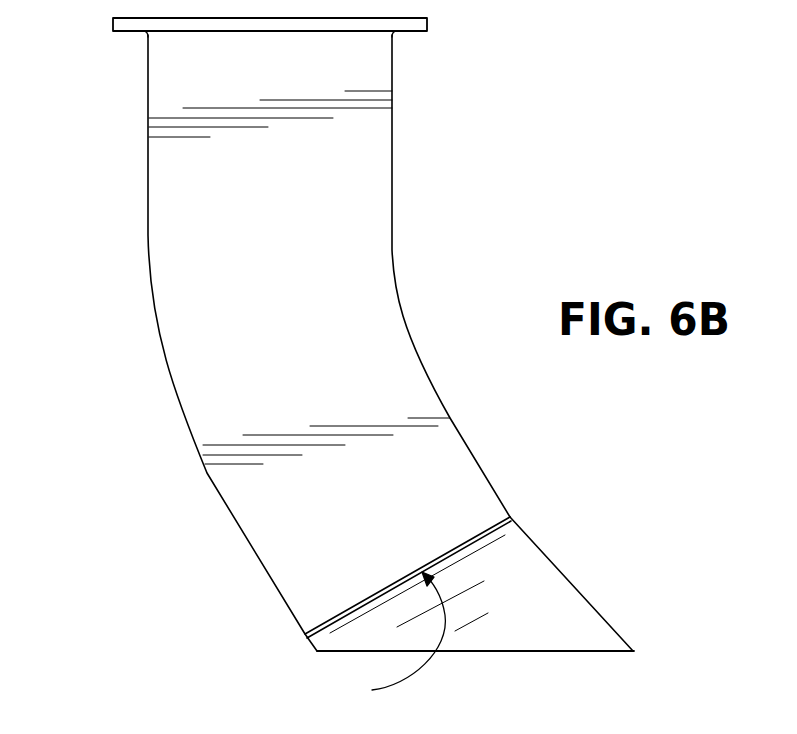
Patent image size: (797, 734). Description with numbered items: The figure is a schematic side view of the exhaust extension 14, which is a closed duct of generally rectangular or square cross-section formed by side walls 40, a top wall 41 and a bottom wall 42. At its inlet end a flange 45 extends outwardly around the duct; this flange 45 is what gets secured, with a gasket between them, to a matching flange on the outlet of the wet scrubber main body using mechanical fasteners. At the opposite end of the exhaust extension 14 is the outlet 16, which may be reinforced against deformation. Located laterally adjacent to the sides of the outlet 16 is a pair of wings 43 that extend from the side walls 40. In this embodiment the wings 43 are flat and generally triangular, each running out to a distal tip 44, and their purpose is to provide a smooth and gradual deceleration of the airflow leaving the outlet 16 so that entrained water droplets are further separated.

The exhaust extension 14 is at (116, 398).
The outlet 16 is at (393, 637).
The side walls 40 is at (289, 279).
The top wall 41 is at (398, 290).
The bottom wall 42 is at (207, 473).
The wings 43 is at (497, 595).
The tip 44 is at (648, 651).
The flange 45 is at (413, 32).